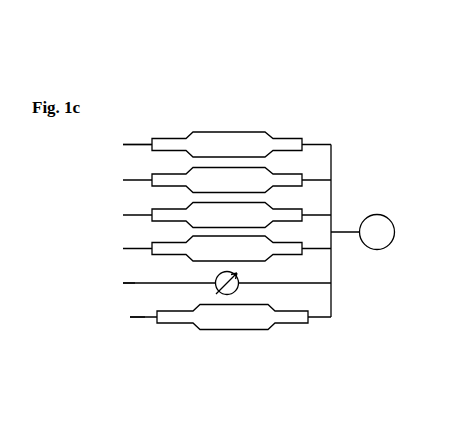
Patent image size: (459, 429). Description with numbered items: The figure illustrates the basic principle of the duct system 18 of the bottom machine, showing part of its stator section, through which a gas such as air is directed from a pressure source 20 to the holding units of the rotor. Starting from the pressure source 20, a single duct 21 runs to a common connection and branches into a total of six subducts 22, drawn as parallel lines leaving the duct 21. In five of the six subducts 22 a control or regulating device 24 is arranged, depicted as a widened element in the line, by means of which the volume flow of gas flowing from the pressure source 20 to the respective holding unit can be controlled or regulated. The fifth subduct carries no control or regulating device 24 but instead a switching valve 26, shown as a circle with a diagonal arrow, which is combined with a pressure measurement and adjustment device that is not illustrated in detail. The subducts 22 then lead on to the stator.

The duct system 18 is at (313, 92).
The pressure source 20 is at (378, 250).
The duct 21 is at (350, 230).
The subducts 22 is at (138, 353).
The control or regulating device 24 is at (222, 141).
The switching valve 26 is at (218, 278).